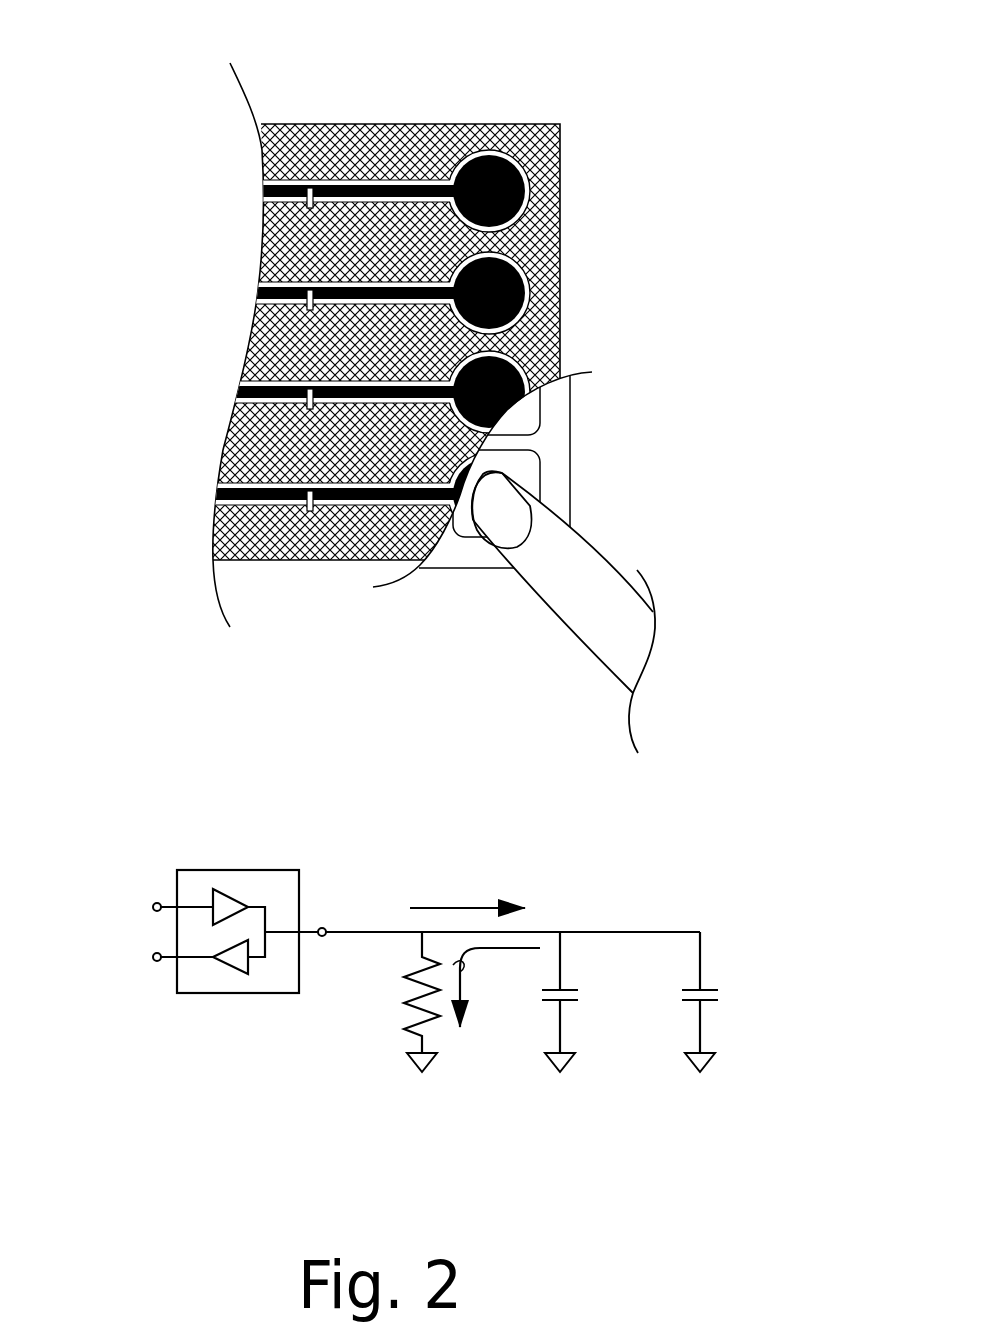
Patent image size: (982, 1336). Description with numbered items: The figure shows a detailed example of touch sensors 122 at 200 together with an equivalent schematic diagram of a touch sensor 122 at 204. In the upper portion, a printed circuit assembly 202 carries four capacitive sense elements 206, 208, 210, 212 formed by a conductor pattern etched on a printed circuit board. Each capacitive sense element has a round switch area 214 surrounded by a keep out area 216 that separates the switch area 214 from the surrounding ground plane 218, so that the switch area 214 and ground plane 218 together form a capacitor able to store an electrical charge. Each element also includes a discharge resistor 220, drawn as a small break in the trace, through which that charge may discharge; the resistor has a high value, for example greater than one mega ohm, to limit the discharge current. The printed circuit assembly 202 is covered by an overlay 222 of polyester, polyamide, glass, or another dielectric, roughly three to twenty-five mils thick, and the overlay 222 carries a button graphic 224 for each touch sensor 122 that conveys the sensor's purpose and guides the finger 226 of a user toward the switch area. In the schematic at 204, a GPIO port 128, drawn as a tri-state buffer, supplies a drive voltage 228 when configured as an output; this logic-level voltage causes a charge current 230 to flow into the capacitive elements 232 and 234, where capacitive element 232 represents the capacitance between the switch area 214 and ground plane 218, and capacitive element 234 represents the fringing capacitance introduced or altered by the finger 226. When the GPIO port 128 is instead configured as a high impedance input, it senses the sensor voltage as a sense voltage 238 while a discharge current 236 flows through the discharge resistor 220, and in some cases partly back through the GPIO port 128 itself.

The detailed example of touch sensors 200 is at (717, 63).
The touch sensor 122 is at (211, 126).
The printed circuit assembly 202 is at (508, 122).
The ground plane 218 is at (420, 147).
The keep out area 216 is at (528, 167).
The switch area 214 is at (515, 218).
The capacitive sense element 206 is at (262, 188).
The capacitive sense element 208 is at (257, 287).
The capacitive sense element 210 is at (233, 390).
The capacitive sense element 212 is at (216, 493).
The discharge resistor 220 is at (300, 210).
The button graphic 224 is at (537, 452).
The overlay 222 is at (473, 568).
The finger 226 is at (618, 577).
The schematic diagram of a touch sensor 204 is at (653, 855).
The GPIO port 128 is at (285, 868).
The drive voltage 228 is at (157, 890).
The sense voltage 238 is at (157, 972).
The charge current 230 is at (462, 912).
The discharge current 236 is at (458, 970).
The capacitive element 232 is at (587, 1010).
The capacitive element 234 is at (727, 1010).